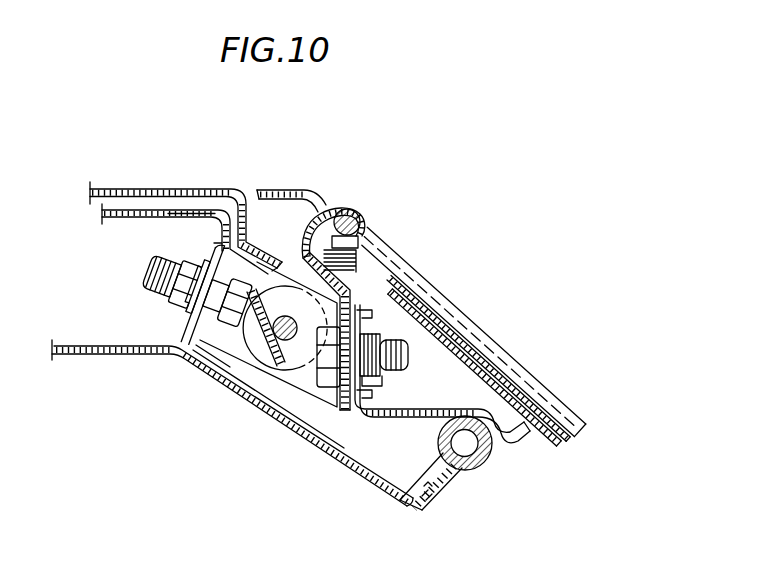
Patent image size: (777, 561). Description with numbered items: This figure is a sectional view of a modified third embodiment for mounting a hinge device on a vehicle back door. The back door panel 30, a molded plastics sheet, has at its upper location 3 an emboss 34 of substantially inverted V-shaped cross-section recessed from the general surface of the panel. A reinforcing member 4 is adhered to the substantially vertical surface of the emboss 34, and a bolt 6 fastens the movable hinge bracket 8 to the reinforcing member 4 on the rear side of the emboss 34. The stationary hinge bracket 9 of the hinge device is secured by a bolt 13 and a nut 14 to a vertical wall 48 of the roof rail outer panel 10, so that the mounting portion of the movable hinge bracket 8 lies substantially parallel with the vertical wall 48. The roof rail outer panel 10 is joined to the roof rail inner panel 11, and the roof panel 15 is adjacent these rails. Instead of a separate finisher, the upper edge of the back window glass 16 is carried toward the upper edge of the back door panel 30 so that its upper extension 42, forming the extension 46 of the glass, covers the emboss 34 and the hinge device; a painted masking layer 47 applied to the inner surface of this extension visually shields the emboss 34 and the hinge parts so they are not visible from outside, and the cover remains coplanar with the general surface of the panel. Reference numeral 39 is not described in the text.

The location 3 is at (384, 393).
The reinforcing member 4 is at (373, 313).
The bolt 6 is at (327, 382).
The movable hinge bracket 8 is at (297, 384).
The stationary hinge bracket 9 is at (253, 283).
The roof rail outer panel 10 is at (123, 220).
The roof rail inner panel 11 is at (90, 357).
The bolt 13 is at (228, 384).
The nut 14 is at (173, 315).
The roof panel 15 is at (141, 188).
The back window glass 16 is at (550, 407).
The back door panel 30 is at (322, 200).
The emboss 34 is at (393, 414).
The bolt 39 is at (388, 340).
The upper extension 42 is at (398, 249).
The extension 46 is at (490, 363).
The painted masking layer 47 is at (515, 428).
The vertical wall 48 is at (200, 361).